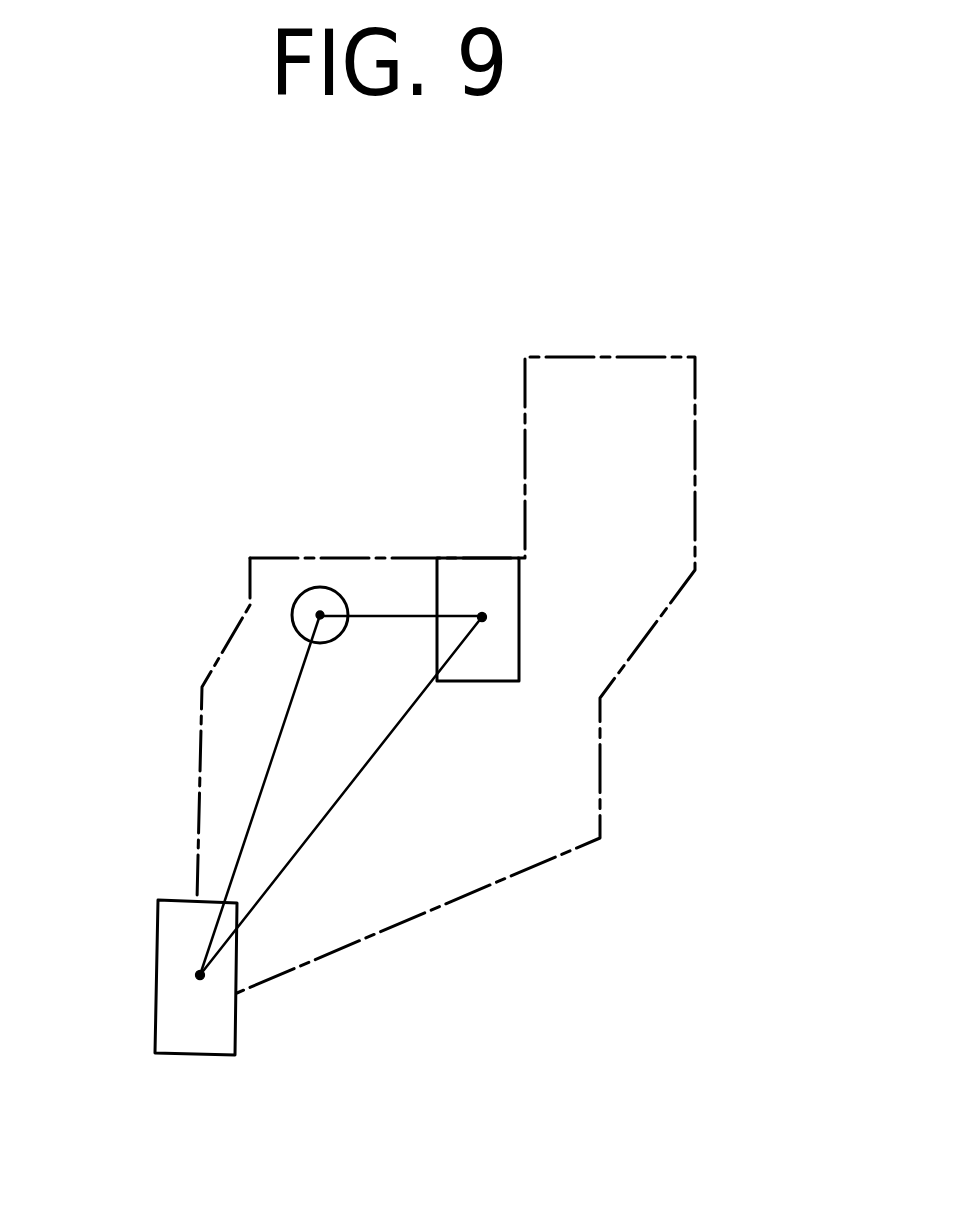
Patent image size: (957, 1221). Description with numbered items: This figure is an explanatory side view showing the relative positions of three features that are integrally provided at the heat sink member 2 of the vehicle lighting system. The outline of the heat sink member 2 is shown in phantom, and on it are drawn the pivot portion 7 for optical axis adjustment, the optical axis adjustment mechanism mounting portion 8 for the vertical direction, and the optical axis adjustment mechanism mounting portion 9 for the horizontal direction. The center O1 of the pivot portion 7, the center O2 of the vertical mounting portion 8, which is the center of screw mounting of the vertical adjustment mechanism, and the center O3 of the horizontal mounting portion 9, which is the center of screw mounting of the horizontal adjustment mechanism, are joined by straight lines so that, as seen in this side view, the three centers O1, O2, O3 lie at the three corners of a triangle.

The heat sink member 2 is at (697, 417).
The pivot portion 7 is at (300, 593).
The optical axis adjustment mechanism mounting portion for vertical direction 8 is at (157, 935).
The optical axis adjustment mechanism mounting portion for horizontal direction 9 is at (493, 560).
The center of the pivot portion O1 is at (320, 610).
The center of the vertical mounting portion O2 is at (200, 975).
The center of the horizontal mounting portion O3 is at (482, 614).